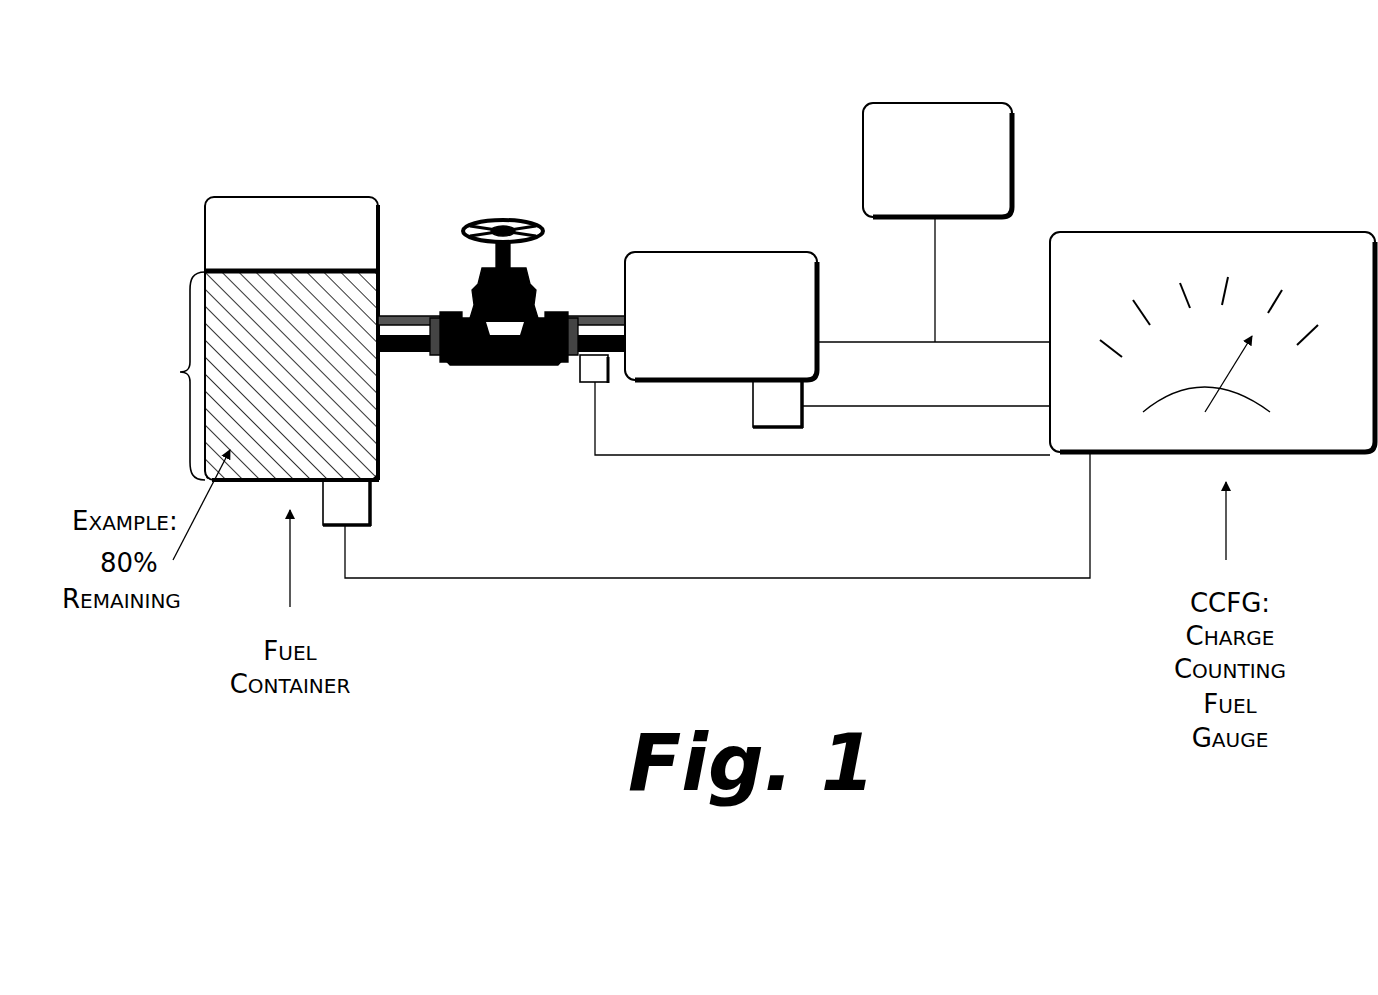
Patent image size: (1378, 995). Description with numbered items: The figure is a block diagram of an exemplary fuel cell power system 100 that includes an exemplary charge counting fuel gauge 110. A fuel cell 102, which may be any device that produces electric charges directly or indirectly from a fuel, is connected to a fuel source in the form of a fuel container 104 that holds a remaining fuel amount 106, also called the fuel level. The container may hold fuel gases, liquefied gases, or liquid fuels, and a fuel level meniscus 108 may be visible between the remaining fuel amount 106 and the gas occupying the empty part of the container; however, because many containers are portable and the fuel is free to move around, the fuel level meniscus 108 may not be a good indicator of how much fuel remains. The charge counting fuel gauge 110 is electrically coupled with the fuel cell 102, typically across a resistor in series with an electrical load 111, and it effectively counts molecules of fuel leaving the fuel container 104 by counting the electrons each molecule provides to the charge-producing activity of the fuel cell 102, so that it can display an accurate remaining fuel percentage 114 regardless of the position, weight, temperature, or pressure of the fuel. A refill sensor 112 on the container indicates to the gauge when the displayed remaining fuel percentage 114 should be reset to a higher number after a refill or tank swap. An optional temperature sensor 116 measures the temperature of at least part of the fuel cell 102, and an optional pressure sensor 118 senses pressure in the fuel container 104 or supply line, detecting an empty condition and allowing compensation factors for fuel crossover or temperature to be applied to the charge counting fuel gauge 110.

The fuel cell power system 100 is at (765, 62).
The fuel cell 102 is at (704, 359).
The fuel container 104 is at (292, 196).
The remaining fuel amount 106 is at (156, 382).
The fuel level meniscus 108 is at (250, 265).
The charge counting fuel gauge 110 is at (1212, 340).
The electrical load 111 is at (921, 188).
The refill sensor 112 is at (362, 511).
The remaining fuel percentage 114 is at (1262, 442).
The temperature sensor 116 is at (768, 410).
The pressure sensor 118 is at (590, 379).